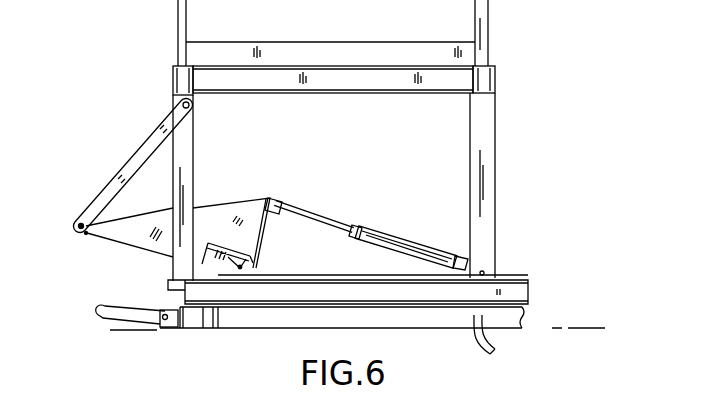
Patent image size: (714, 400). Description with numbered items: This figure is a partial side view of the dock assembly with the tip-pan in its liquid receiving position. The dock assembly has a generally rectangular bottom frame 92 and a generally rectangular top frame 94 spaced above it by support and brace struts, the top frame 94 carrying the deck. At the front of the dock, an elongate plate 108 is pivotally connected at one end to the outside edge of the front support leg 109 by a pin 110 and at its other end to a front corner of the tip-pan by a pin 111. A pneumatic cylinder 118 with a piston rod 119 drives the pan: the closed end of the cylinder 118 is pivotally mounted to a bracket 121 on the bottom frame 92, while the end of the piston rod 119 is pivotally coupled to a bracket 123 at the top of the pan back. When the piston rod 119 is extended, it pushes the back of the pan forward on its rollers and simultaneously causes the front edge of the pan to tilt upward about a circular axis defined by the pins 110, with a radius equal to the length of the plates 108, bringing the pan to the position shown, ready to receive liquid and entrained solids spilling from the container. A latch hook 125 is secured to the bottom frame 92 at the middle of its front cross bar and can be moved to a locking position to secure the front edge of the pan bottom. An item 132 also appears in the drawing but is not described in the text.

The top frame 94 is at (462, 78).
The pin 110 is at (193, 105).
The elongate plate 108 is at (127, 172).
The front support leg 109 is at (190, 167).
The bracket 123 is at (279, 203).
The piston rod 119 is at (343, 222).
The pneumatic cylinder 118 is at (410, 240).
The bracket 121 is at (468, 262).
The pin 111 is at (77, 230).
The bottom frame 92 is at (516, 292).
The latch hook 125 is at (97, 321).
The hydraulic hose 132 is at (500, 333).